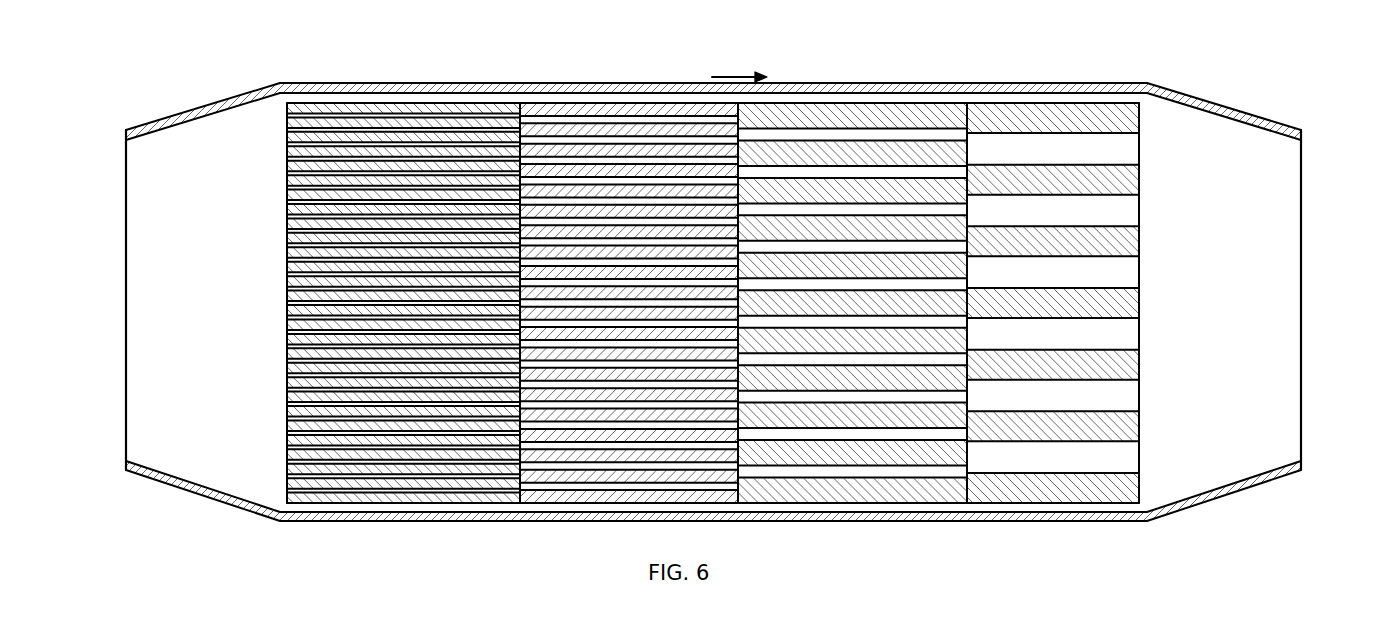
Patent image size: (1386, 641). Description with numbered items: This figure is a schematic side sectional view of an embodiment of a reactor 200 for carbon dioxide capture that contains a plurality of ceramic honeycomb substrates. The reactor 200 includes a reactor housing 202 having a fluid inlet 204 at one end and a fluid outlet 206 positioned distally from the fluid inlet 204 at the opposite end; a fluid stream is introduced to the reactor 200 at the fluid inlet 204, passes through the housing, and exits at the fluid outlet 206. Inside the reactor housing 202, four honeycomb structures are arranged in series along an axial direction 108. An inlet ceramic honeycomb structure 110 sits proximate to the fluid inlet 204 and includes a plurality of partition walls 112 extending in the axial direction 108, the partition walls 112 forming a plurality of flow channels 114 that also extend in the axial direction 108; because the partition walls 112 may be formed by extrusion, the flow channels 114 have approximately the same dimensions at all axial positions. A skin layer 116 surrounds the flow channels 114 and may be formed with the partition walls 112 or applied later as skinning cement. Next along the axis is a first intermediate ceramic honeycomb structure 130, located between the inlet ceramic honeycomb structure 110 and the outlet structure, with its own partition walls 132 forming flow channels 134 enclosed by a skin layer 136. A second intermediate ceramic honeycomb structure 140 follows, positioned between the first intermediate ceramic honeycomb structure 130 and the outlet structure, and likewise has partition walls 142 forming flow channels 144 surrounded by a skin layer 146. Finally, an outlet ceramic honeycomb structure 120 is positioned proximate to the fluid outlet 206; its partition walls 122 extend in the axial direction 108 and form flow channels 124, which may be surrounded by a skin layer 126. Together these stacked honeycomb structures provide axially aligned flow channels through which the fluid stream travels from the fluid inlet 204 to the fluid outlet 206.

The axial direction 108 is at (733, 76).
The inlet ceramic honeycomb structure 110 is at (374, 518).
The partition walls 112 is at (287, 443).
The flow channels 114 is at (287, 465).
The skin layer 116 is at (473, 504).
The outlet ceramic honeycomb structure 120 is at (1049, 518).
The partition walls 122 is at (1068, 298).
The flow channels 124 is at (993, 337).
The skin layer 126 is at (1050, 102).
The first intermediate ceramic honeycomb structure 130 is at (620, 516).
The partition walls 132 is at (592, 106).
The flow channels 134 is at (550, 116).
The skin layer 136 is at (644, 101).
The second intermediate ceramic honeycomb structure 140 is at (849, 518).
The partition walls 142 is at (867, 408).
The flow channels 144 is at (802, 362).
The skin layer 146 is at (868, 102).
The reactor 200 is at (1206, 92).
The reactor housing 202 is at (190, 503).
The fluid inlet 204 is at (126, 222).
The fluid outlet 206 is at (1301, 263).